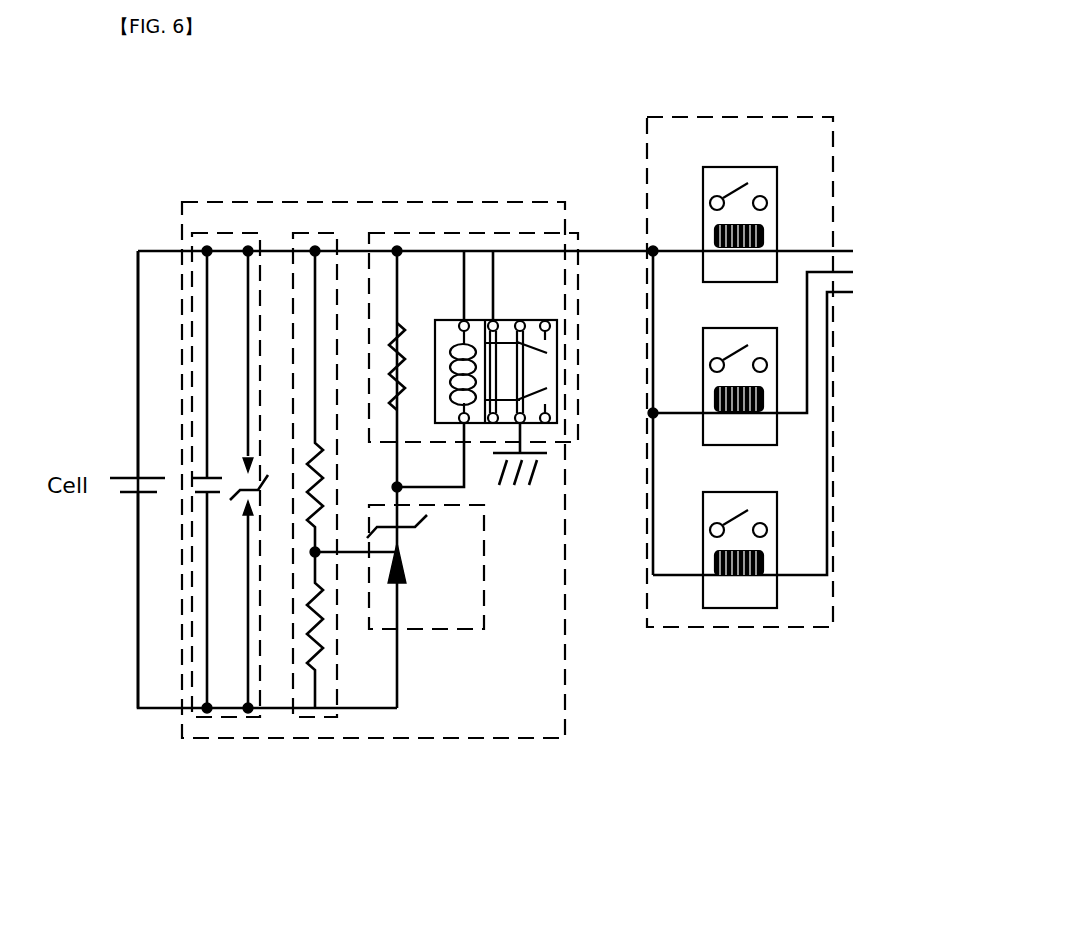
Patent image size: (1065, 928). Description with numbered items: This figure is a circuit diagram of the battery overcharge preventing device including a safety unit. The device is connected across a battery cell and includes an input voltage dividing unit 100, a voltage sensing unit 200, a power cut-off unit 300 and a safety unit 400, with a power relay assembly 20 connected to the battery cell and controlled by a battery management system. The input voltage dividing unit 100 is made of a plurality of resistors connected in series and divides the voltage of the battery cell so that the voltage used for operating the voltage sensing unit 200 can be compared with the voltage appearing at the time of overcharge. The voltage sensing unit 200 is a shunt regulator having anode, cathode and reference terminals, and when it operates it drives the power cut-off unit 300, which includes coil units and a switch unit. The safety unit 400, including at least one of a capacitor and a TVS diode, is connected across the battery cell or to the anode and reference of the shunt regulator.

The power relay assembly 20 is at (523, 738).
The input voltage dividing unit 100 is at (303, 720).
The voltage sensing unit 200 is at (418, 630).
The power cut-off unit 300 is at (503, 232).
The safety unit 400 is at (200, 720).